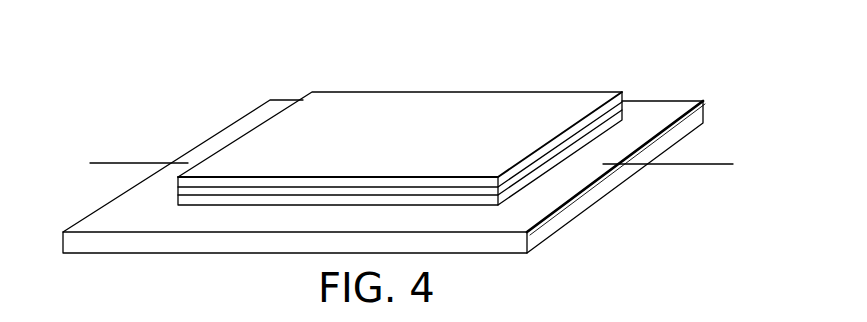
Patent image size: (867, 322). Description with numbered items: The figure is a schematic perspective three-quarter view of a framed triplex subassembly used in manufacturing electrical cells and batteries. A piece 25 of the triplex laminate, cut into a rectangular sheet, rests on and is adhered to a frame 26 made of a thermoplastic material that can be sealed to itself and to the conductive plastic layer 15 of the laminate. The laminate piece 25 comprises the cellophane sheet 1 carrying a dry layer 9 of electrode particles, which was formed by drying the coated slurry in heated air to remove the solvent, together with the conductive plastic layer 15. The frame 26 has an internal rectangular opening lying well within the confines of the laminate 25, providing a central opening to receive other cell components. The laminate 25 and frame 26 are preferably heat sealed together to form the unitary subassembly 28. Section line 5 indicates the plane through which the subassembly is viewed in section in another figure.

The cellophane sheet 1 is at (563, 103).
The section line 5- 5 is at (93, 167).
The dry layer 9 is at (567, 143).
The conductive plastic layer 15 is at (530, 177).
The piece of laminate 25 is at (403, 154).
The frame 26 is at (677, 110).
The unitary subassembly 28 is at (400, 114).